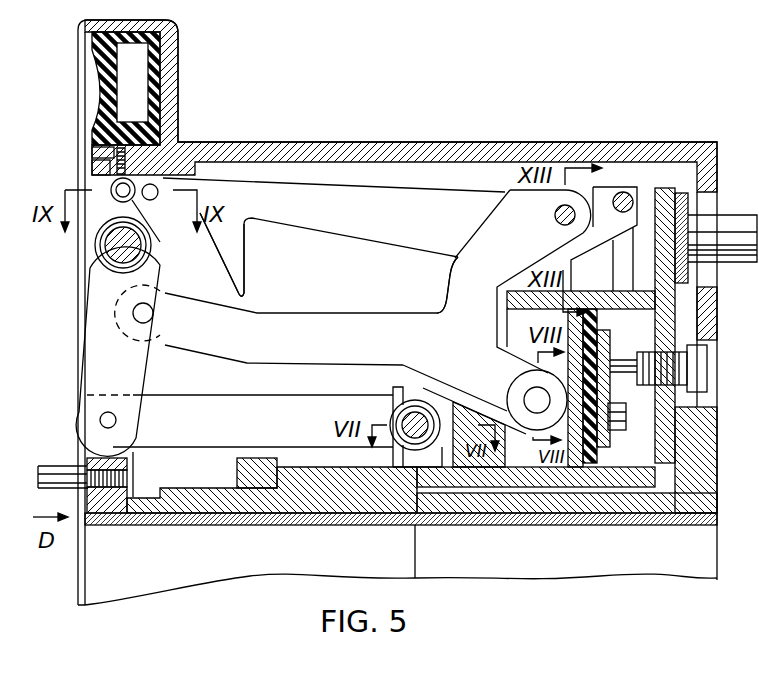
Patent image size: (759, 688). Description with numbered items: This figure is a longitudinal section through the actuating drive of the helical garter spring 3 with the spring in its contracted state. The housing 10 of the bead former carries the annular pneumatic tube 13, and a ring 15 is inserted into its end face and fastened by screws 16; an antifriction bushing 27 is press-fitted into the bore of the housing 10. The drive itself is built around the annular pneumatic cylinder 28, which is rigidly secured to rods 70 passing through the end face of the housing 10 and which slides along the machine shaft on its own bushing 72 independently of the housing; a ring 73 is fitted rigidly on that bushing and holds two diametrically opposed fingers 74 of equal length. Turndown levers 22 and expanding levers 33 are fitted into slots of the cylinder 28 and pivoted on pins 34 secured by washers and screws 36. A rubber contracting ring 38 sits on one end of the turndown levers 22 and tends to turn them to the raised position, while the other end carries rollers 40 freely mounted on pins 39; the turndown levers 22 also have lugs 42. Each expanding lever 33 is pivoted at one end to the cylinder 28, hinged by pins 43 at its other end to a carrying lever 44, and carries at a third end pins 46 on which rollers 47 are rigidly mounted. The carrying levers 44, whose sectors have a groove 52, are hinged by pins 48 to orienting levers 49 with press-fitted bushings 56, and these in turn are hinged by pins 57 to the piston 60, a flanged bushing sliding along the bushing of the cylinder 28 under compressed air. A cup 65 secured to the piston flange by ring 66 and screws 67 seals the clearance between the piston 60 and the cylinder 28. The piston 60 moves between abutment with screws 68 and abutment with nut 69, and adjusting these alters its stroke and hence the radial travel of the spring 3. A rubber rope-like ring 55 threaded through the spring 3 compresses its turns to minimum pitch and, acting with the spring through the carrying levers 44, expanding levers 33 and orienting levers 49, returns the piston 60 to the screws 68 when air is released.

The housing 10 is at (178, 45).
The annular pneumatic tube 13 is at (157, 97).
The ring 15 is at (92, 168).
The screws 16 is at (93, 148).
The pins 39 is at (118, 198).
The rollers 40 is at (150, 200).
The helical garter spring 3 is at (98, 252).
The groove 52 is at (141, 242).
The resilient contracting ring 55 is at (145, 250).
The carrying levers 44 is at (115, 357).
The pins 43 is at (153, 313).
The pins 48 is at (116, 422).
The orienting levers 49 is at (210, 402).
The turndown levers 22 is at (388, 227).
The lugs 42 is at (238, 240).
The expanding levers 33 is at (420, 327).
The screws 36 is at (555, 203).
The pins 34 is at (558, 225).
The resilient contracting ring 38 is at (623, 192).
The pins 46 is at (530, 398).
The rollers 47 is at (510, 398).
The pins 57 is at (403, 410).
The bushings 56 is at (407, 410).
The cup 65 is at (590, 462).
The ring 66 is at (600, 355).
The screws 67 is at (618, 417).
The screws 68 is at (705, 373).
The annular pneumatic cylinder 28 is at (667, 448).
The rods 70 is at (738, 225).
The piston 60 is at (500, 455).
The bushing 27 is at (680, 518).
The nut 69 is at (258, 495).
The bushing 72 is at (148, 520).
The ring 73 is at (113, 510).
The fingers 74 is at (53, 466).